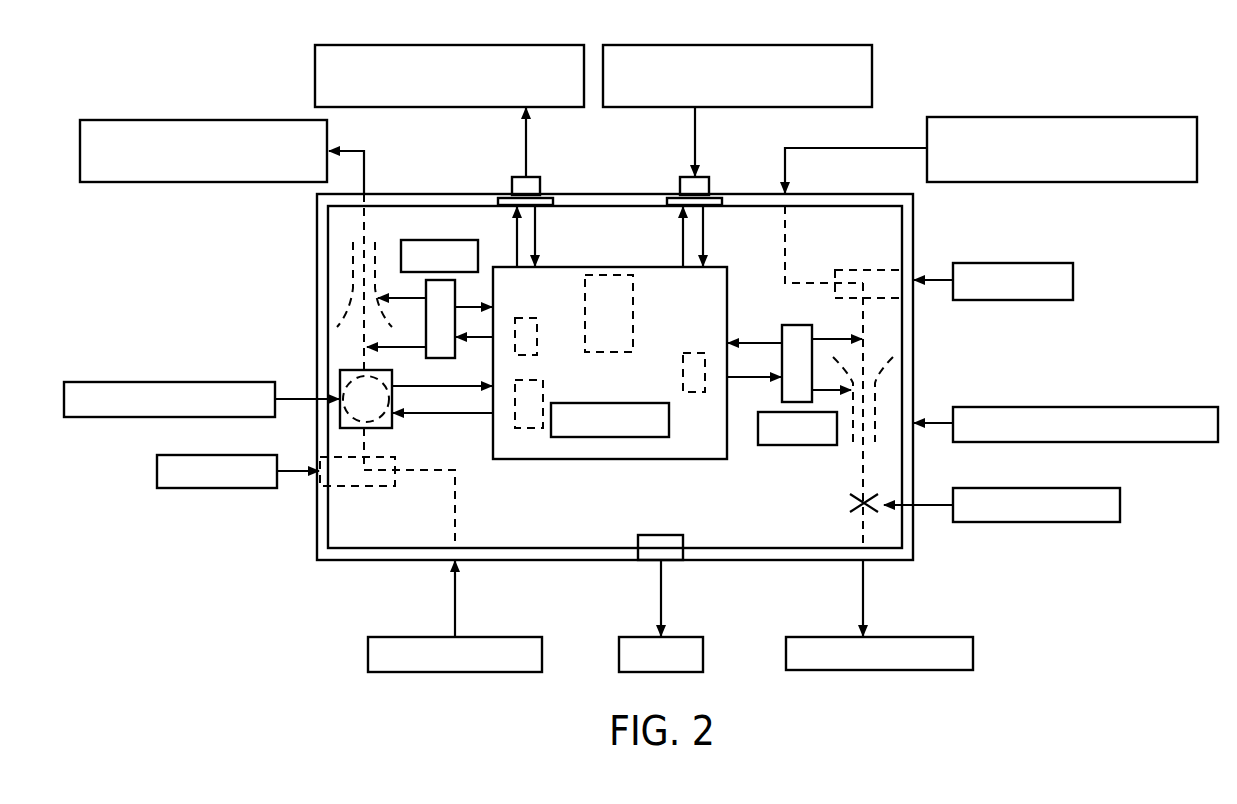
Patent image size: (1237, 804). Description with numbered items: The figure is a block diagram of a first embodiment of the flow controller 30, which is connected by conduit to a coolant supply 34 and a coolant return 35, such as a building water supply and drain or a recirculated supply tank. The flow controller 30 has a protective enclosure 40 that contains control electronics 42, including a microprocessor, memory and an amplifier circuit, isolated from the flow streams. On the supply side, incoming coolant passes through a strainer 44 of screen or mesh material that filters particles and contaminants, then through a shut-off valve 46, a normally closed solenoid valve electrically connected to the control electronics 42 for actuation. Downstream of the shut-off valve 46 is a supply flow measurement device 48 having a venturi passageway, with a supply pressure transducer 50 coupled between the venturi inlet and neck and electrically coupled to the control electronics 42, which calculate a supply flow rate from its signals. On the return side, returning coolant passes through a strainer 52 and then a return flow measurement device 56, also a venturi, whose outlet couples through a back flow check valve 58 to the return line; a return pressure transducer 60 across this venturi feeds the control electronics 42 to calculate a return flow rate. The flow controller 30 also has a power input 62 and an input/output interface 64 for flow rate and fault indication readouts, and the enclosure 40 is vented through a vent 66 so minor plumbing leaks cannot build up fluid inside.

The flow controller 30 is at (909, 58).
The coolant supply 34 is at (447, 673).
The coolant return 35 is at (878, 671).
The protective enclosure 40 is at (913, 214).
The control electronics 42 is at (610, 460).
The strainer 44 is at (357, 489).
The shut-off valve 46 is at (353, 368).
The supply flow measurement device 48 is at (343, 296).
The supply pressure transducer 50 is at (426, 290).
The strainer 52 is at (872, 270).
The return flow measurement device 56 is at (900, 378).
The back flow check valve 58 is at (853, 497).
The return pressure transducer 60 is at (790, 325).
The power input 62 is at (681, 188).
The input/output interface 64 is at (512, 186).
The vent 66 is at (672, 562).